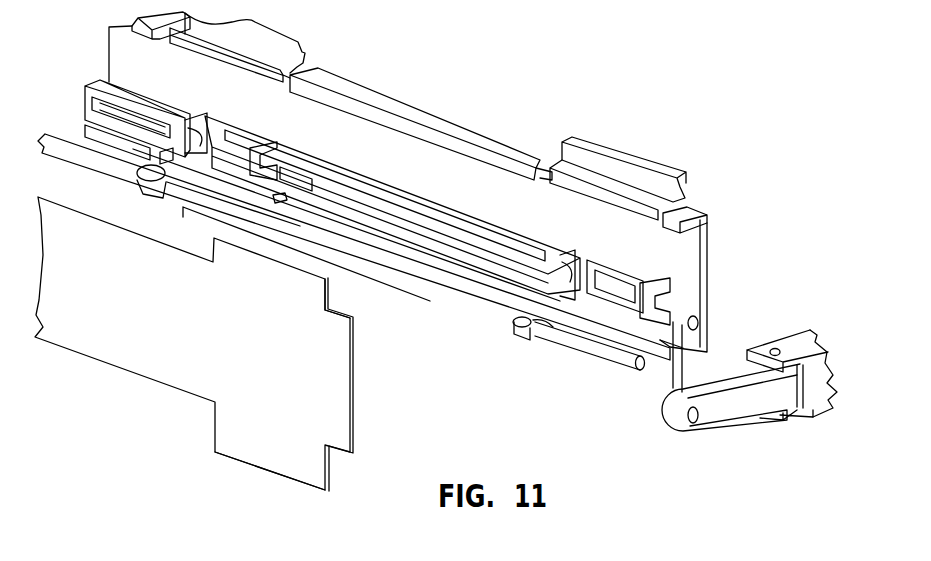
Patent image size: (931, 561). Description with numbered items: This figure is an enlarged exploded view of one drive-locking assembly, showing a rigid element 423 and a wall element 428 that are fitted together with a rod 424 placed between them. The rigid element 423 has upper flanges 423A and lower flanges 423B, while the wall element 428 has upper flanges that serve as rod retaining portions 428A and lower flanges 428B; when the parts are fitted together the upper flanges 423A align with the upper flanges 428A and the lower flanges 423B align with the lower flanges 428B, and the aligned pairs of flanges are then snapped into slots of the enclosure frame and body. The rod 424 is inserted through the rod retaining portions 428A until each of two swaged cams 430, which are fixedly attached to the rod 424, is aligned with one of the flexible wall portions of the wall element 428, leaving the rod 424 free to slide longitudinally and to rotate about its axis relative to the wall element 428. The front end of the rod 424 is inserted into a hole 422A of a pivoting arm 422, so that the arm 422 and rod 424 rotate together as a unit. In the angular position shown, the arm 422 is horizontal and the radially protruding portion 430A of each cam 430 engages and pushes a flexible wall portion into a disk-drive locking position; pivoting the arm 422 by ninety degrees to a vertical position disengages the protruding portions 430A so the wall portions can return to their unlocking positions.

The pivoting arm 422 is at (780, 340).
The hole 422A is at (737, 418).
The rigid element 423 is at (360, 405).
The upper flanges 423A is at (318, 270).
The lower flanges 423B is at (280, 480).
The rod 424 is at (228, 218).
The wall element 428 is at (421, 111).
The rod retaining portions 428A is at (85, 100).
The lower flanges 428B is at (653, 393).
The swaged cam 430 is at (153, 197).
The radially protruding portion 430A is at (138, 172).